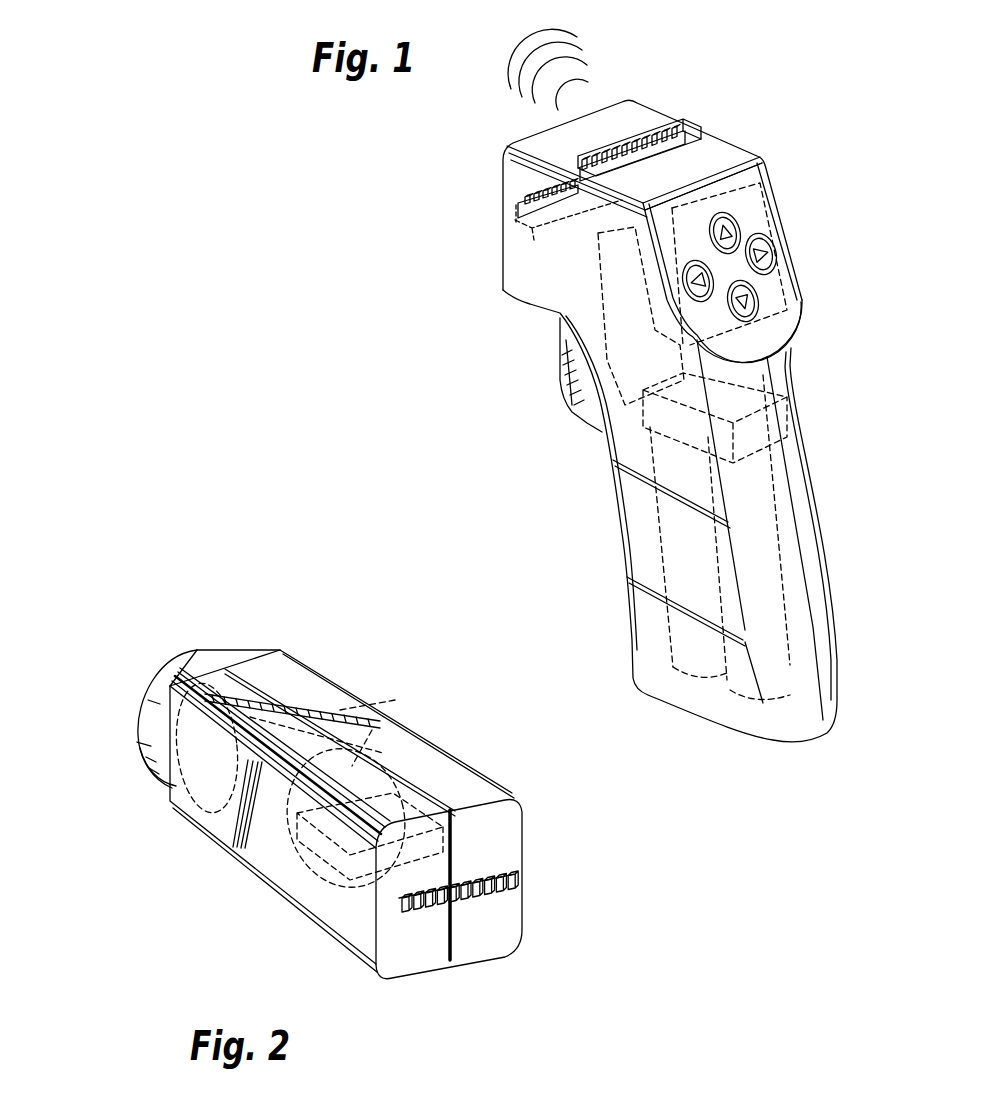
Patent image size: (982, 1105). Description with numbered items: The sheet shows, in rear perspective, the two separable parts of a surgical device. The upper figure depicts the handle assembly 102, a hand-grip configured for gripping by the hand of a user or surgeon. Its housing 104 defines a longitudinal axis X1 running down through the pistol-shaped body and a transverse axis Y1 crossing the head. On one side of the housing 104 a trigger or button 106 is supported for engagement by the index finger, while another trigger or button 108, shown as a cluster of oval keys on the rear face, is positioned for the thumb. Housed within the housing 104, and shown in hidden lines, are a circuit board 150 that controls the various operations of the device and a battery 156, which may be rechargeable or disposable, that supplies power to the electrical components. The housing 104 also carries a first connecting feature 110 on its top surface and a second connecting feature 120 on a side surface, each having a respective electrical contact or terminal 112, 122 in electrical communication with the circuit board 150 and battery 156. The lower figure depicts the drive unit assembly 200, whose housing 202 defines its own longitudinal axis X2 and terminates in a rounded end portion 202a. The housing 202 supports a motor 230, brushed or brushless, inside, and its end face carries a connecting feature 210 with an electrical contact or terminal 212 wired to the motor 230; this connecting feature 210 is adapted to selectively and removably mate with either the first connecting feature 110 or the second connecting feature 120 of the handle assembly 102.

In FIG. 1, the handle assembly 102 is at (742, 92).
In FIG. 1, the housing 104 is at (777, 378).
In FIG. 1, the trigger or button 106 is at (580, 387).
In FIG. 1, the trigger or button 108 is at (752, 220).
In FIG. 1, the first connecting feature 110 is at (663, 127).
In FIG. 1, the electrical contact or terminal 112 is at (701, 146).
In FIG. 1, the second connecting feature 120 is at (523, 197).
In FIG. 1, the electrical contact or terminal 122 is at (527, 232).
In FIG. 1, the circuit board 150 is at (600, 297).
In FIG. 1, the battery 156 is at (730, 692).
In FIG. 1, the longitudinal axis X1 is at (645, 135).
In FIG. 1, the transverse axis Y1 is at (502, 165).
In FIG. 2, the drive unit assembly 200 is at (403, 667).
In FIG. 2, the housing 202 is at (407, 730).
In FIG. 2, the housing end cap 202a is at (163, 690).
In FIG. 2, the connecting feature 210 is at (477, 877).
In FIG. 2, the electrical contact or terminal 212 is at (410, 920).
In FIG. 2, the motor 230 is at (260, 847).
In FIG. 2, the longitudinal axis X2 is at (137, 678).